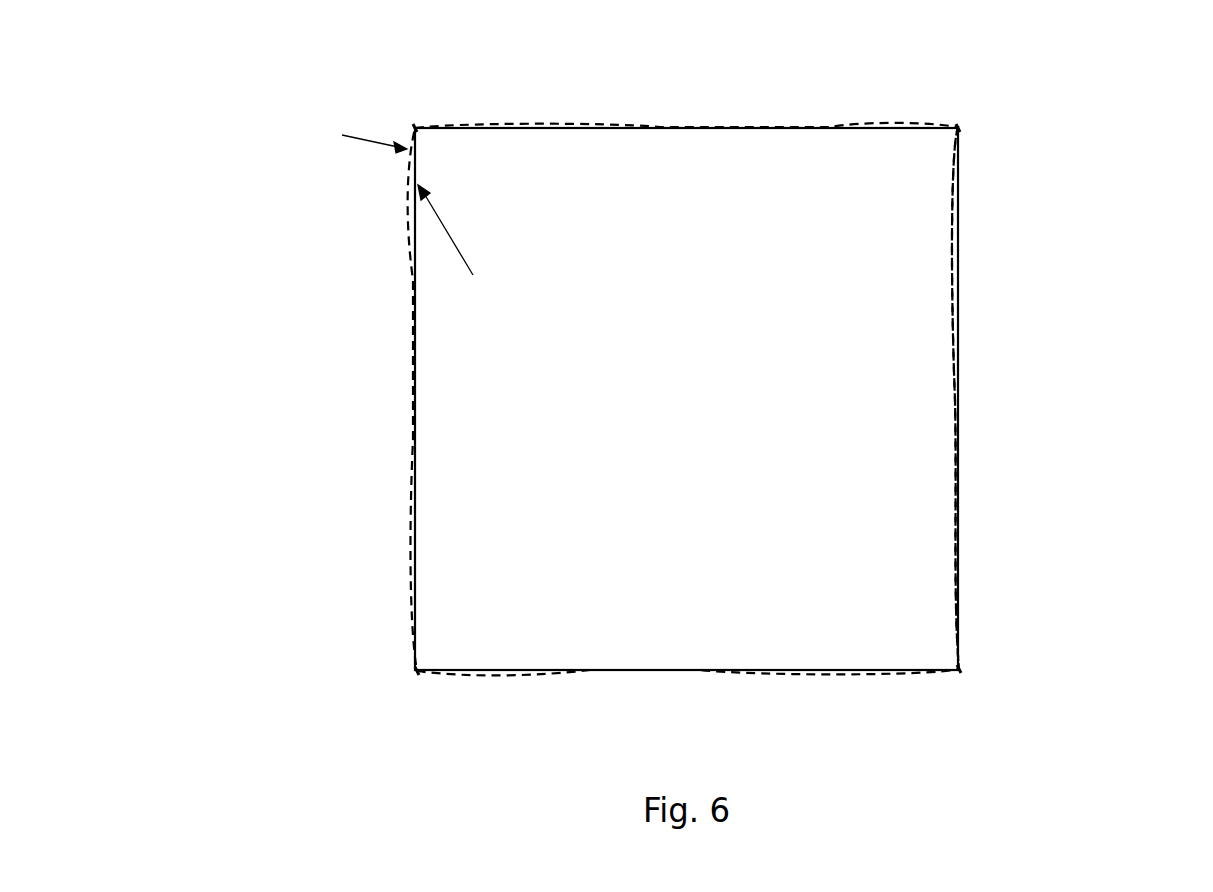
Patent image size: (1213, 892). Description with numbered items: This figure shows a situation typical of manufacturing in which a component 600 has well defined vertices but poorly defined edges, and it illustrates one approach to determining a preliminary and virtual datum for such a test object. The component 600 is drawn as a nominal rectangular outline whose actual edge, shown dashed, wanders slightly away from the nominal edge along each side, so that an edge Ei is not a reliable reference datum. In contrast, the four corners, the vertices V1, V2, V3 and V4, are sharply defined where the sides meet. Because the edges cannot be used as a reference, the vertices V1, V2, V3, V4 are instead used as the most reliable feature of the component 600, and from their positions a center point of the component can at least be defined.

The component 600 is at (1078, 420).
The vertex V1 is at (415, 127).
The vertex V2 is at (954, 110).
The vertex V3 is at (959, 669).
The vertex V4 is at (417, 671).
The edge Ei is at (958, 180).